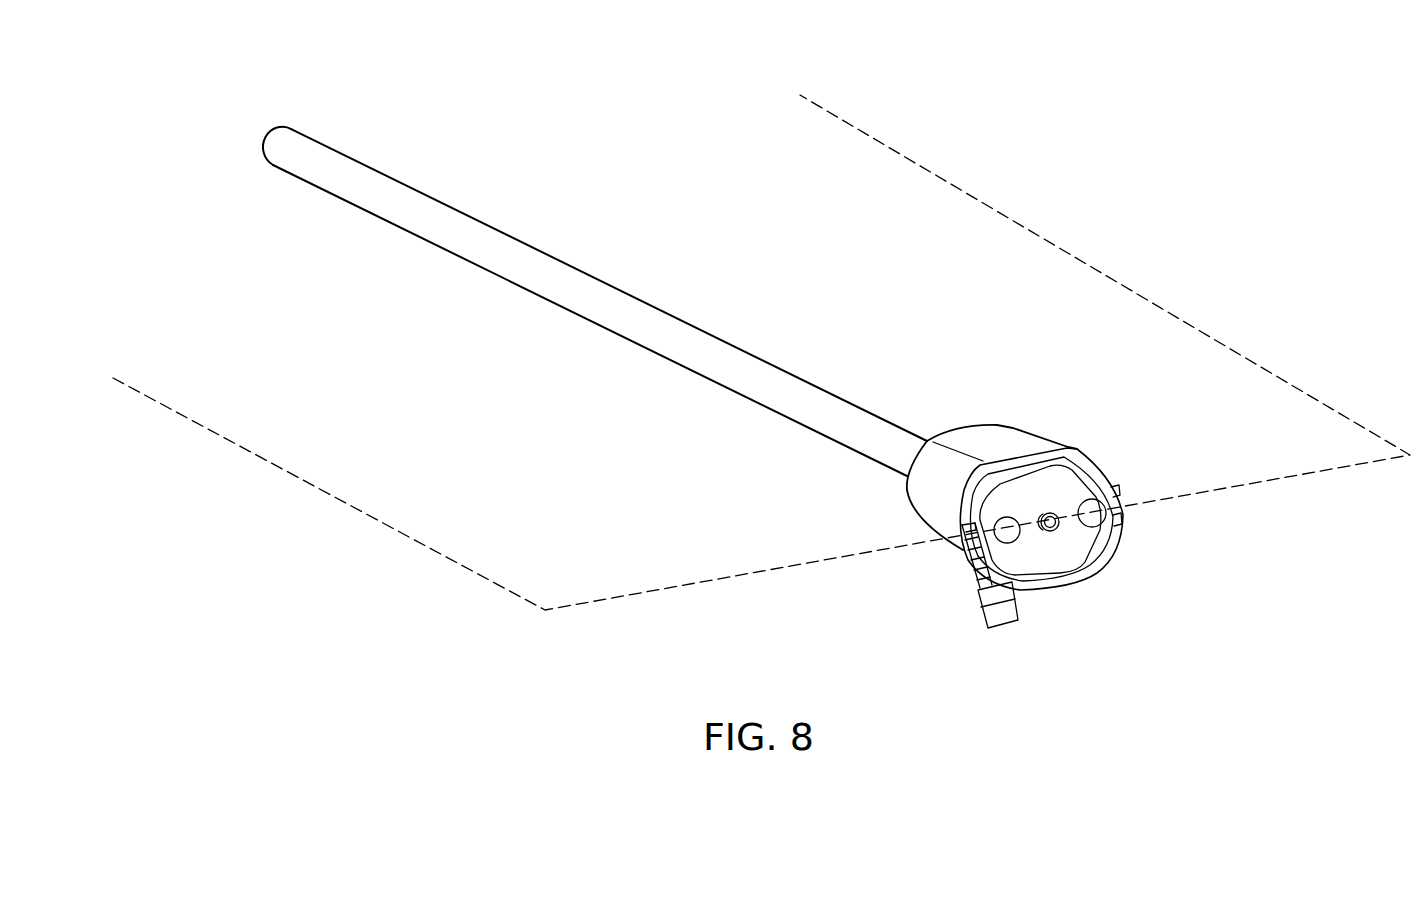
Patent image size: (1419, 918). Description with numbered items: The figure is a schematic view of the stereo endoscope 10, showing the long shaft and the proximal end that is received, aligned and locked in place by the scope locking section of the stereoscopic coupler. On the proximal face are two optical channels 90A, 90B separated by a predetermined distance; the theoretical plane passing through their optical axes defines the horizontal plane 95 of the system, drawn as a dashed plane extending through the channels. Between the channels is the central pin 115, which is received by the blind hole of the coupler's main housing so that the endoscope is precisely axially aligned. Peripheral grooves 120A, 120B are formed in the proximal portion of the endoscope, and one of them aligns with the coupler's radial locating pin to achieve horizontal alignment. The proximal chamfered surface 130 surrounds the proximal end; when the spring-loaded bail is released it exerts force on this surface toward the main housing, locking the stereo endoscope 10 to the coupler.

The stereo endoscope 10 is at (672, 115).
The horizontal plane 95 is at (1146, 310).
The proximal chamfered surface 130 is at (957, 496).
The groove 120A is at (1095, 513).
The groove 120B is at (997, 535).
The central pin 115 is at (1052, 532).
The optical channel 90A is at (972, 562).
The optical channel 90B is at (1088, 514).